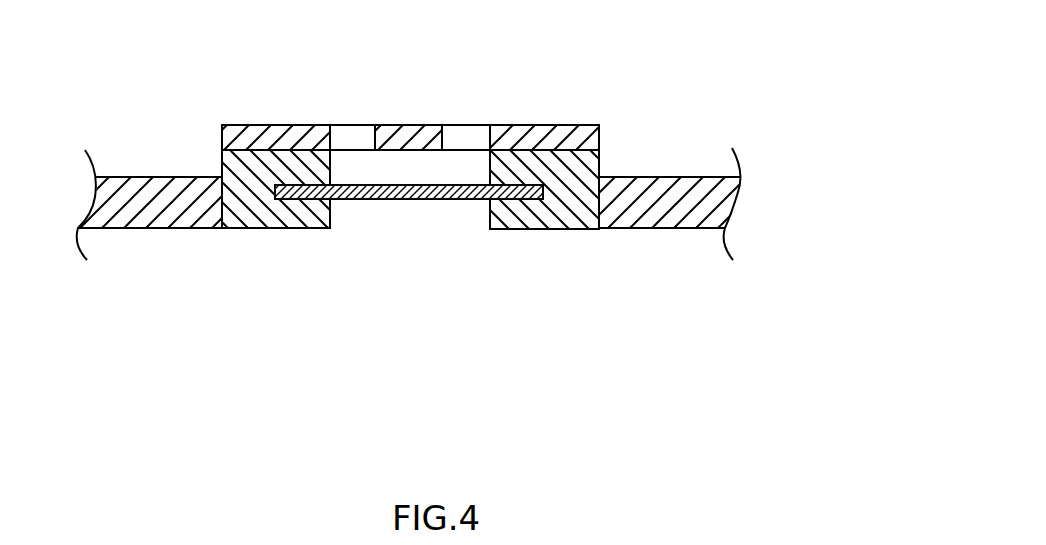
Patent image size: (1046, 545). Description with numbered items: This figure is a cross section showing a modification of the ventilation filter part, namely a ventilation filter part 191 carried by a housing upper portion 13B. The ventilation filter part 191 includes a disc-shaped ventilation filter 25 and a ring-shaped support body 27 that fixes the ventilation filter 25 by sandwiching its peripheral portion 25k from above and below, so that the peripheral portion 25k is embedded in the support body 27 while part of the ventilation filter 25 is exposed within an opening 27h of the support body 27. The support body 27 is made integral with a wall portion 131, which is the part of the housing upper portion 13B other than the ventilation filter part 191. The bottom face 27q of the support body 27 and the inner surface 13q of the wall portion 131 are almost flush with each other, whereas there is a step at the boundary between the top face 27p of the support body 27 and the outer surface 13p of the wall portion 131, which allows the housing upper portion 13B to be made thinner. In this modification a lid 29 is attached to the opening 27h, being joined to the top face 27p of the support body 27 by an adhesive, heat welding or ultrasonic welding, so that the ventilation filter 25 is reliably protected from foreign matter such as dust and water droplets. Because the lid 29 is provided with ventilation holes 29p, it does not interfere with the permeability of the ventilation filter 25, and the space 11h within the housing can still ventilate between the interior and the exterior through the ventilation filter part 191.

The housing upper portion 13B is at (437, 155).
The outer surface of the wall portion 13p is at (688, 177).
The inner surface of the wall portion 13q is at (693, 229).
The wall portion 131 is at (726, 216).
The ventilation filter part 191 is at (425, 170).
The ventilation filter 25 is at (409, 241).
The peripheral portion 25k is at (305, 230).
The support body 27 is at (442, 190).
The opening 27h is at (350, 155).
The top face 27p is at (600, 135).
The bottom face 27q is at (520, 230).
The lid 29 is at (410, 104).
The ventilation holes 29p is at (338, 125).
The space 11h is at (421, 316).